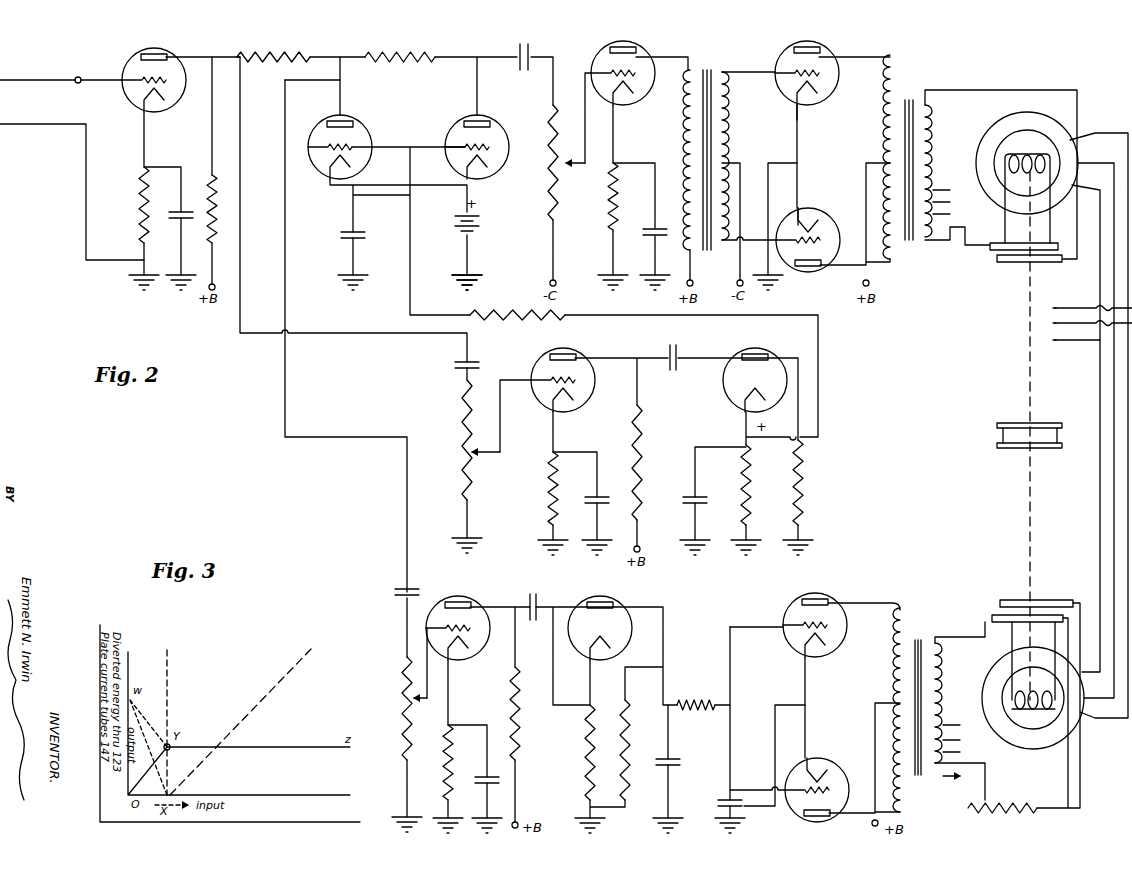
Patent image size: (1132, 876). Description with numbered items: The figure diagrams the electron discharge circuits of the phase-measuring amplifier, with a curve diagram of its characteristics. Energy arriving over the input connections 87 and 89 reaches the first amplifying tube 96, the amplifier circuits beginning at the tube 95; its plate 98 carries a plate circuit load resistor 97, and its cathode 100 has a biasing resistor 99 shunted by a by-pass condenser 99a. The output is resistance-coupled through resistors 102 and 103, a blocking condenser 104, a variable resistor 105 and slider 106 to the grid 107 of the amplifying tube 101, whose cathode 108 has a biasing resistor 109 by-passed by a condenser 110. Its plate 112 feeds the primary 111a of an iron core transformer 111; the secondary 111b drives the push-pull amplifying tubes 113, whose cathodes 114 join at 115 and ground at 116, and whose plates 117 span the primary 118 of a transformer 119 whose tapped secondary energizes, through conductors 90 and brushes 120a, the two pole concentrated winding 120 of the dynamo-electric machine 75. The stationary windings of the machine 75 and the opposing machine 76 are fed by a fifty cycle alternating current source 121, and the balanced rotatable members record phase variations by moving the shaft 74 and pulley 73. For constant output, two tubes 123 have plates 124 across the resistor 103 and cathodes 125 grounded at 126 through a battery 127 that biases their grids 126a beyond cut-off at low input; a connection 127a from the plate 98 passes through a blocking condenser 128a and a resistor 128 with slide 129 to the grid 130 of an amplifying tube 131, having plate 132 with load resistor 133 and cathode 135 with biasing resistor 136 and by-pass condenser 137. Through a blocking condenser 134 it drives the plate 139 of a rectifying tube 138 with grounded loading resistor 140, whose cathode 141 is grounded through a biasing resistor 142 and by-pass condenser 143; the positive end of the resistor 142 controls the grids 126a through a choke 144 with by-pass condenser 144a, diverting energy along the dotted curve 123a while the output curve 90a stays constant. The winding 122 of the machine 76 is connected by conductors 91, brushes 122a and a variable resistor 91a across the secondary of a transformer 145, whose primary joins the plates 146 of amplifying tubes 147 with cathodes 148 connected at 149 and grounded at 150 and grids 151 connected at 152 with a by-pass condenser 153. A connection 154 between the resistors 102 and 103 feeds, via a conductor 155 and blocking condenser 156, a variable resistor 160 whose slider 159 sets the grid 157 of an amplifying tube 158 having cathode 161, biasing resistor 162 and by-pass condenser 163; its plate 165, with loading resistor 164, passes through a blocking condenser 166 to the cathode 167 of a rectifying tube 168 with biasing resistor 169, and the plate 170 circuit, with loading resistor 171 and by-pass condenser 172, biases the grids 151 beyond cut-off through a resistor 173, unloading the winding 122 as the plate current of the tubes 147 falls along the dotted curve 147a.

In FIG. 2, the pulley 73 is at (998, 422).
In FIG. 2, the shaft 74 is at (1028, 484).
In FIG. 2, the dynamo-electric machine 75 is at (1074, 116).
In FIG. 2, the dynamo-electric machine 76 is at (1076, 726).
In FIG. 2, the input terminal 87 is at (100, 78).
In FIG. 2, the input lead 89 is at (52, 120).
In FIG. 2, the conductors 90 is at (998, 88).
In FIG. 3, the curve 90a is at (284, 746).
In FIG. 2, the conductors 91 is at (980, 628).
In FIG. 2, the variable resistor 91a is at (990, 802).
In FIG. 2, the tube 95 is at (166, 87).
In FIG. 2, the amplifying tube 96 is at (126, 60).
In FIG. 2, the plate circuit load resistor 97 is at (210, 168).
In FIG. 2, the plate 98 is at (167, 48).
In FIG. 2, the biasing resistor 99 is at (140, 232).
In FIG. 2, the by-pass condenser 99a is at (178, 214).
In FIG. 2, the cathode 100 is at (148, 108).
In FIG. 2, the amplifying tube 101 is at (606, 54).
In FIG. 2, the resistor 102 is at (273, 63).
In FIG. 2, the resistor 103 is at (425, 60).
In FIG. 2, the blocking condenser 104 is at (517, 62).
In FIG. 2, the variable resistor 105 is at (550, 186).
In FIG. 2, the slider 106 is at (560, 172).
In FIG. 2, the grid 107 is at (608, 70).
In FIG. 2, the cathode 108 is at (610, 204).
In FIG. 2, the biasing resistor 109 is at (626, 100).
In FIG. 2, the condenser 110 is at (652, 230).
In FIG. 2, the iron core transformer 111 is at (716, 62).
In FIG. 2, the primary 111a is at (684, 140).
In FIG. 2, the secondary 111b is at (732, 130).
In FIG. 2, the plate 112 is at (636, 54).
In FIG. 2, the amplifying tubes 113 is at (836, 74).
In FIG. 2, the filament lead 114 is at (806, 108).
In FIG. 2, the connection point 115 is at (798, 146).
In FIG. 2, the ground connection 116 is at (764, 216).
In FIG. 2, the plates 117 is at (822, 54).
In FIG. 2, the primary 118 is at (898, 62).
In FIG. 2, the iron core transformer 119 is at (910, 98).
In FIG. 2, the two pole concentrated winding 120 is at (1012, 152).
In FIG. 2, the plates 120a is at (1064, 262).
In FIG. 2, the alternating current source of supply 121 is at (1088, 318).
In FIG. 2, the two pole concentrated winding 122 is at (1038, 715).
In FIG. 2, the plates 122a is at (1070, 598).
In FIG. 2, the tubes 123 is at (370, 125).
In FIG. 3, the dotted curve 123a is at (282, 682).
In FIG. 2, the plates 124 is at (330, 120).
In FIG. 2, the cathodes 125 is at (334, 168).
In FIG. 2, the ground 126 is at (472, 274).
In FIG. 2, the grids 126a is at (332, 152).
In FIG. 2, the battery 127 is at (480, 230).
In FIG. 2, the connection 127a is at (224, 47).
In FIG. 2, the resistor 128 is at (460, 404).
In FIG. 2, the blocking condenser 128a is at (456, 364).
In FIG. 2, the slide 129 is at (490, 456).
In FIG. 2, the grid 130 is at (580, 378).
In FIG. 2, the amplifying tube 131 is at (542, 358).
In FIG. 2, the plate 132 is at (568, 352).
In FIG. 2, the plate circuit load resistor 133 is at (642, 430).
In FIG. 2, the blocking condenser 134 is at (678, 354).
In FIG. 2, the cathode 135 is at (566, 402).
In FIG. 2, the biasing resistor 136 is at (548, 496).
In FIG. 2, the by-pass condenser 137 is at (592, 496).
In FIG. 2, the rectifying tube 138 is at (752, 348).
In FIG. 2, the plate 139 is at (748, 354).
In FIG. 2, the plate loading resistor 140 is at (804, 476).
In FIG. 2, the cathode 141 is at (742, 400).
In FIG. 2, the biasing resistor 142 is at (750, 508).
In FIG. 2, the by-pass condenser 143 is at (700, 504).
In FIG. 2, the resistor or choke 144 is at (552, 322).
In FIG. 2, the by-pass condenser 144a is at (350, 237).
In FIG. 2, the iron core transformer 145 is at (918, 640).
In FIG. 2, the plates 146 is at (830, 596).
In FIG. 2, the amplifying tubes 147 is at (798, 600).
In FIG. 3, the dotted curve 147a is at (168, 702).
In FIG. 2, the cathodes 148 is at (816, 648).
In FIG. 2, the connection point 149 is at (808, 710).
In FIG. 2, the ground connection 150 is at (775, 758).
In FIG. 2, the grids 151 is at (800, 620).
In FIG. 2, the connection point 152 is at (732, 692).
In FIG. 2, the by-pass condenser 153 is at (718, 800).
In FIG. 2, the connection 154 is at (342, 82).
In FIG. 2, the conductor 155 is at (284, 400).
In FIG. 2, the blocking condenser 156 is at (398, 588).
In FIG. 2, the grid 157 is at (472, 630).
In FIG. 2, the amplifying tube 158 is at (452, 596).
In FIG. 2, the slider 159 is at (423, 700).
In FIG. 2, the variable resistor 160 is at (406, 698).
In FIG. 2, the cathode 161 is at (460, 648).
In FIG. 2, the biasing resistor 162 is at (450, 766).
In FIG. 2, the by-pass condenser 163 is at (510, 770).
In FIG. 2, the plate circuit loading resistor 164 is at (512, 716).
In FIG. 2, the plate 165 is at (472, 604).
In FIG. 2, the blocking condenser 166 is at (538, 600).
In FIG. 2, the cathode 167 is at (606, 648).
In FIG. 2, the rectifying tube 168 is at (616, 606).
In FIG. 2, the biasing resistor 169 is at (586, 764).
In FIG. 2, the plate 170 is at (572, 606).
In FIG. 2, the loading resistor 171 is at (630, 712).
In FIG. 2, the by-pass condenser 172 is at (672, 758).
In FIG. 2, the resistor 173 is at (710, 700).